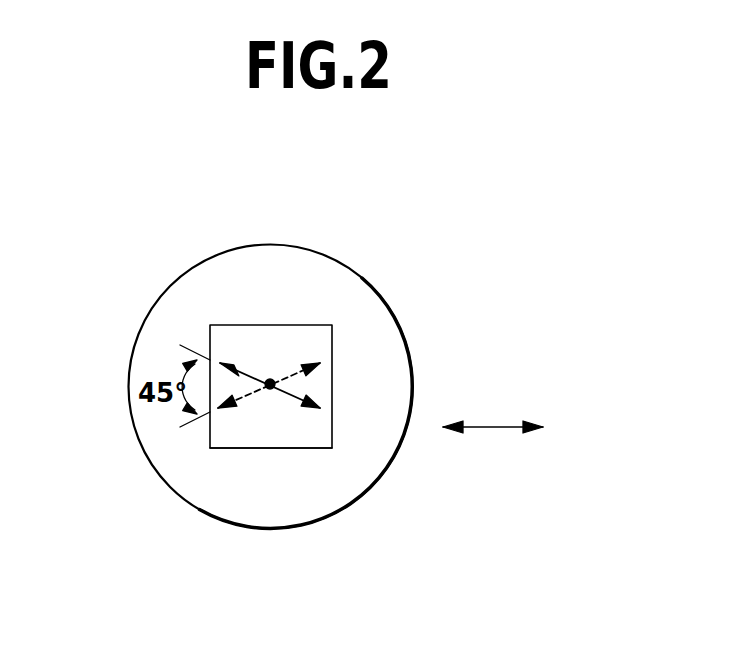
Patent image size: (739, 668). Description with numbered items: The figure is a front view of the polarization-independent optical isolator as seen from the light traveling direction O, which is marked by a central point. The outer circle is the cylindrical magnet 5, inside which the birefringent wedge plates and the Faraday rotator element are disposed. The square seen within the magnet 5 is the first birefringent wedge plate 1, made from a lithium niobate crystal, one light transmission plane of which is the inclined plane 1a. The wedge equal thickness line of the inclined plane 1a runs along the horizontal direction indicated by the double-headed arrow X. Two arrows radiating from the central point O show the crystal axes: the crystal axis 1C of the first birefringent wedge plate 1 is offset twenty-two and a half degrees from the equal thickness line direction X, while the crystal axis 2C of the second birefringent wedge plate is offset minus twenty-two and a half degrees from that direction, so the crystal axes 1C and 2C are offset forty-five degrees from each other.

The cylindrical magnet 5 is at (187, 300).
The first birefringent wedge plate 1 is at (313, 330).
The inclined plane 1a is at (230, 430).
The crystal axis 1C is at (252, 370).
The crystal axis 2C is at (287, 377).
The light traveling direction O is at (270, 384).
The equal thickness line direction X is at (500, 427).